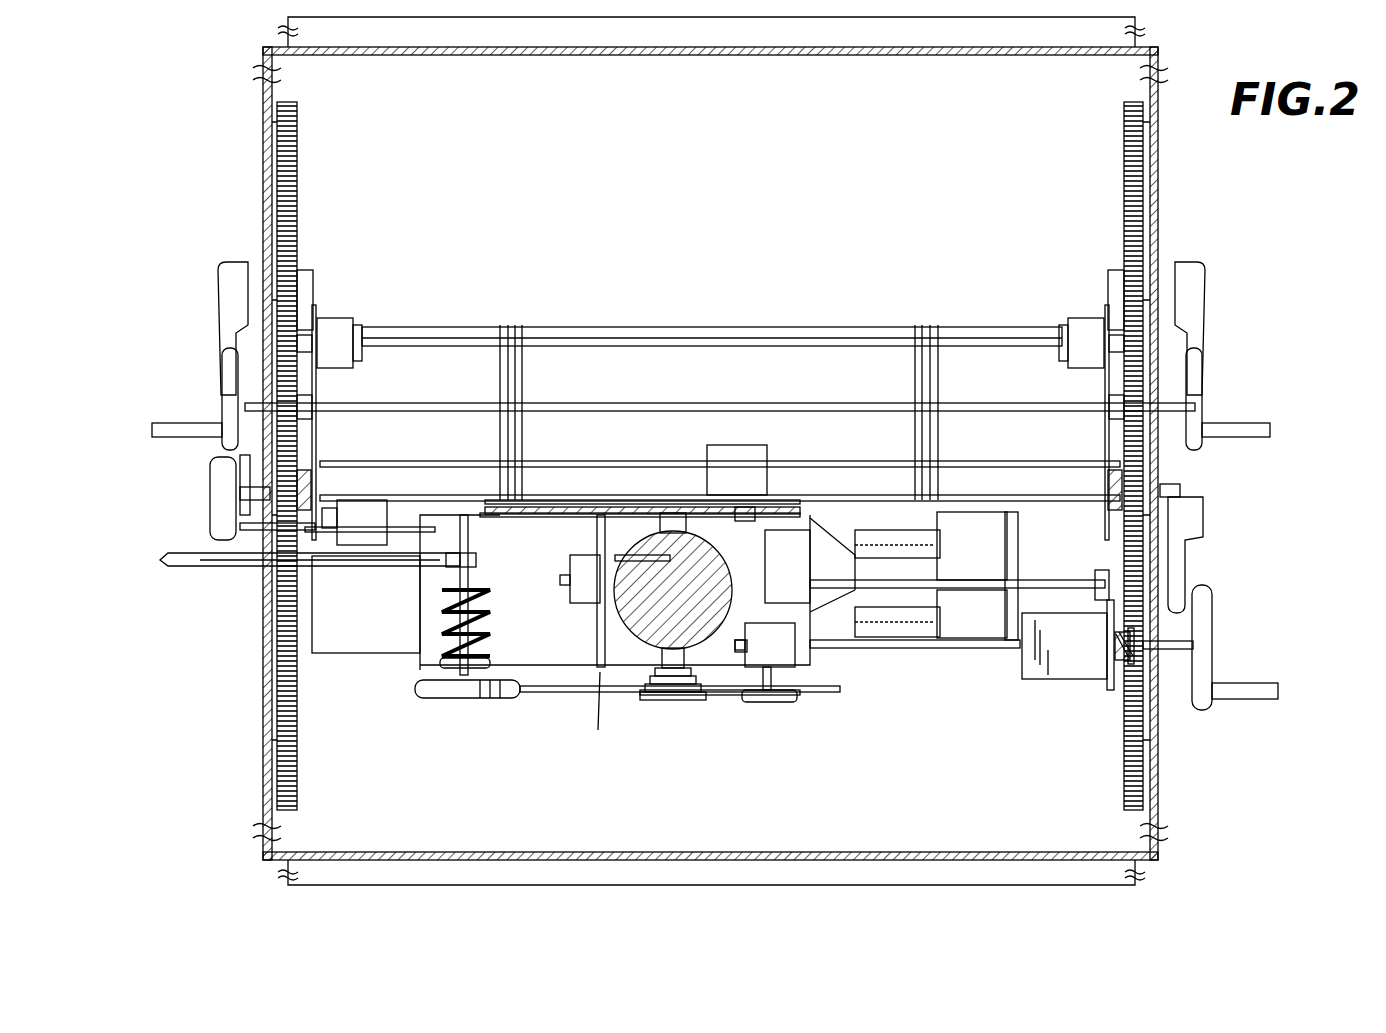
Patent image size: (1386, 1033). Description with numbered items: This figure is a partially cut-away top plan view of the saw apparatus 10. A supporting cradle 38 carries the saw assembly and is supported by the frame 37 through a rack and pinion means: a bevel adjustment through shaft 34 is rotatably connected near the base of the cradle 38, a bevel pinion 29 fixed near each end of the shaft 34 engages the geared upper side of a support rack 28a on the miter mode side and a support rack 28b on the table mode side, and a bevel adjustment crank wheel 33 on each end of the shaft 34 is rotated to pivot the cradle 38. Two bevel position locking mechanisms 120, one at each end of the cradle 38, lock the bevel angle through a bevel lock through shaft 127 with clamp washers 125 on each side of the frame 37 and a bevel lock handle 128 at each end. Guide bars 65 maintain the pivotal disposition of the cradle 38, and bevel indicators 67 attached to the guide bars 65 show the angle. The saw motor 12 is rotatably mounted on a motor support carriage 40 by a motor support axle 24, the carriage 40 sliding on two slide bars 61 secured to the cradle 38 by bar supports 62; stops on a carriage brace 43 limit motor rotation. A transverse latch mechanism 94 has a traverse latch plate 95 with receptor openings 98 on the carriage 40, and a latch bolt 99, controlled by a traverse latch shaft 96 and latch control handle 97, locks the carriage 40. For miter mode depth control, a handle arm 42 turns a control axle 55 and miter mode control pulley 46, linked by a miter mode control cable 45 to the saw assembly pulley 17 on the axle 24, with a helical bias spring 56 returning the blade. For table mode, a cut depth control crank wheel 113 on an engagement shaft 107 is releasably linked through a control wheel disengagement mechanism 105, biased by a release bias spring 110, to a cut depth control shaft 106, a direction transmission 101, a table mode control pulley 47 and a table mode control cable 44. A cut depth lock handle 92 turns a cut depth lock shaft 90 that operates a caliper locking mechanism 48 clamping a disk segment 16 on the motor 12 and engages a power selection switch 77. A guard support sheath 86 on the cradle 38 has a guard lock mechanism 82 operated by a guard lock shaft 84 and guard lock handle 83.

The apparatus 10 is at (262, 122).
The saw motor 12 is at (690, 604).
The disk segment 16 is at (468, 540).
The saw assembly pulley 17 is at (660, 700).
The motor support axle 24 is at (672, 540).
The support rack 28a is at (297, 785).
The support rack 28b is at (1125, 788).
The bevel pinion 29 is at (312, 380).
The bevel adjustment crank wheel 33 is at (230, 378).
The bevel adjustment through shaft 34 is at (645, 403).
The frame 37 is at (905, 56).
The supporting cradle 38 is at (895, 452).
The motor support carriage 40 is at (500, 627).
The handle arm 42 is at (185, 566).
The carriage brace 43 is at (580, 719).
The table mode control cable 44 is at (718, 695).
The miter mode control cable 45 is at (560, 692).
The miter mode control pulley 46 is at (455, 698).
The table mode control pulley 47 is at (760, 702).
The caliper locking mechanism 48 is at (812, 542).
The control axle 55 is at (445, 585).
The helical bias spring 56 is at (432, 664).
The slide bar 61 is at (880, 540).
The bar support 62 is at (952, 565).
The guide bar 65 is at (300, 490).
The bevel indicator 67 is at (243, 490).
The power selection switch 77 is at (597, 620).
The guard lock mechanism 82 is at (373, 547).
The guard lock handle 83 is at (222, 537).
The guard lock shaft 84 is at (262, 530).
The guard support sheath 86 is at (382, 518).
The cut depth lock shaft 90 is at (575, 580).
The cut depth lock handle 92 is at (1200, 525).
The transverse latch mechanism 94 is at (735, 445).
The traverse latch plate 95 is at (598, 510).
The traverse latch shaft 96 is at (615, 500).
The latch control handle 97 is at (247, 512).
The receptor opening 98 is at (510, 507).
The latch bolt 99 is at (745, 512).
The direction transmission 101 is at (775, 657).
The control wheel disengagement mechanism 105 is at (1080, 684).
The cut depth control shaft 106 is at (950, 648).
The engagement shaft 107 is at (1212, 690).
The release bias spring 110 is at (1125, 650).
The cut depth control crank wheel 113 is at (1212, 640).
The bevel position locking mechanism 120 is at (335, 318).
The clamp washer 125 is at (285, 300).
The bevel lock through shaft 127 is at (668, 338).
The bevel lock handle 128 is at (235, 278).